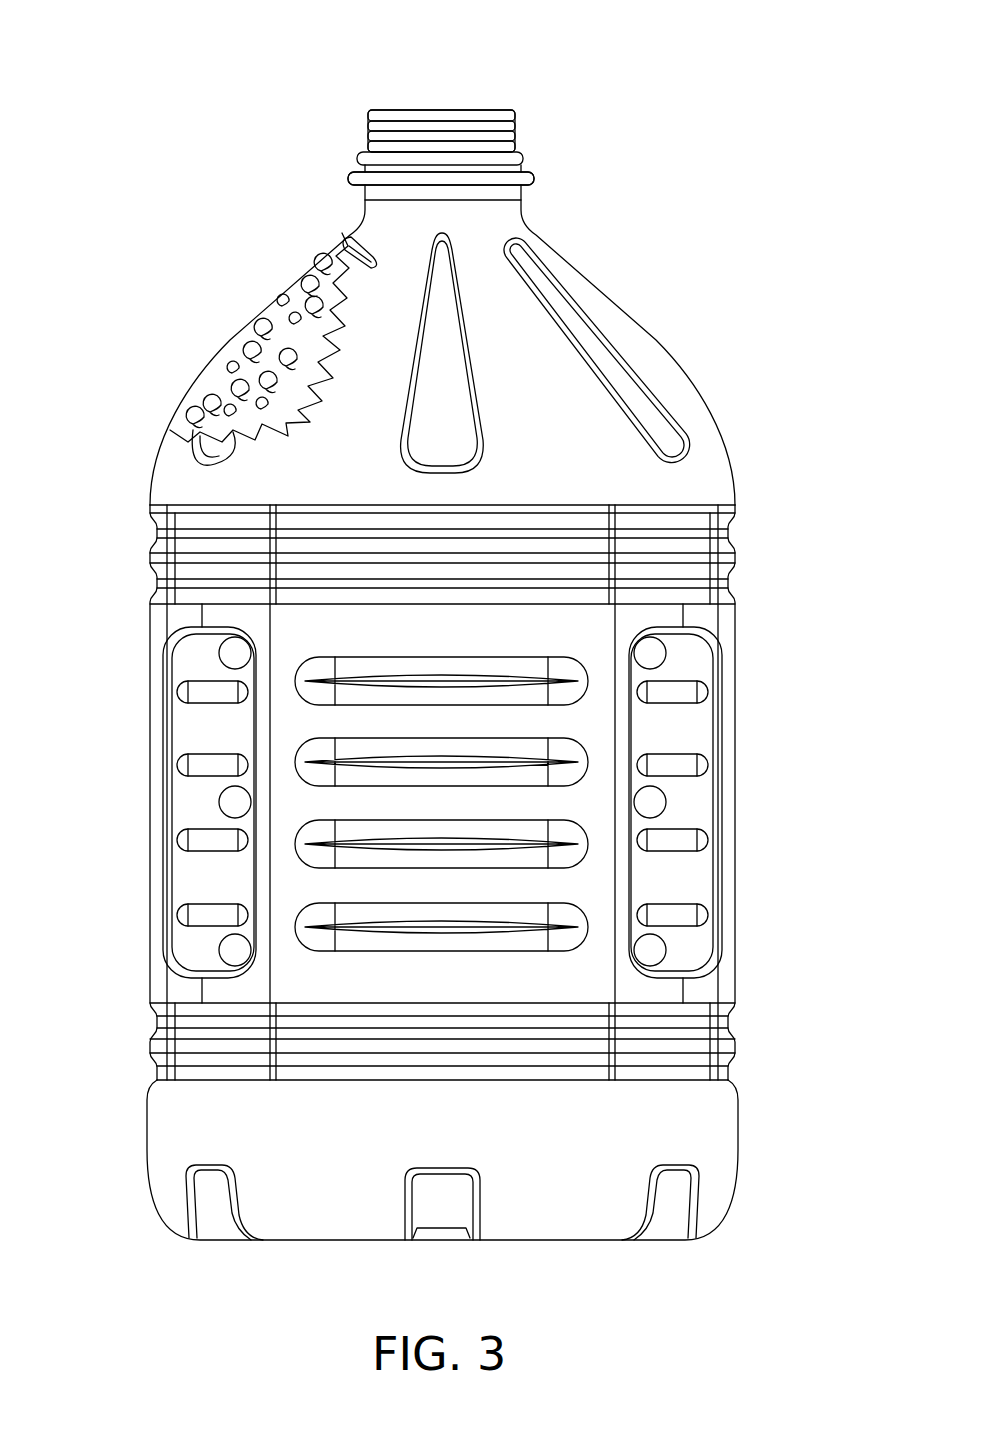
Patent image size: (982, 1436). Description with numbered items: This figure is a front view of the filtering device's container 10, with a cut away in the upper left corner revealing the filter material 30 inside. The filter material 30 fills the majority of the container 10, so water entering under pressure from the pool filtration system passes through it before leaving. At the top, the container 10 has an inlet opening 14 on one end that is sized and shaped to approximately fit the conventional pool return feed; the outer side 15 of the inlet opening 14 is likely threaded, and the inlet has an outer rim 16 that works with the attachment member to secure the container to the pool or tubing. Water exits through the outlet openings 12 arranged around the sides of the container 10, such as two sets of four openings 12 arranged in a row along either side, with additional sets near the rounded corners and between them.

The container 10 is at (583, 432).
The outlet openings 12 is at (220, 653).
The inlet opening 14 is at (388, 85).
The outer side of the inlet opening 15 is at (343, 128).
The outer rim 16 is at (492, 175).
The filter material 30 is at (232, 347).